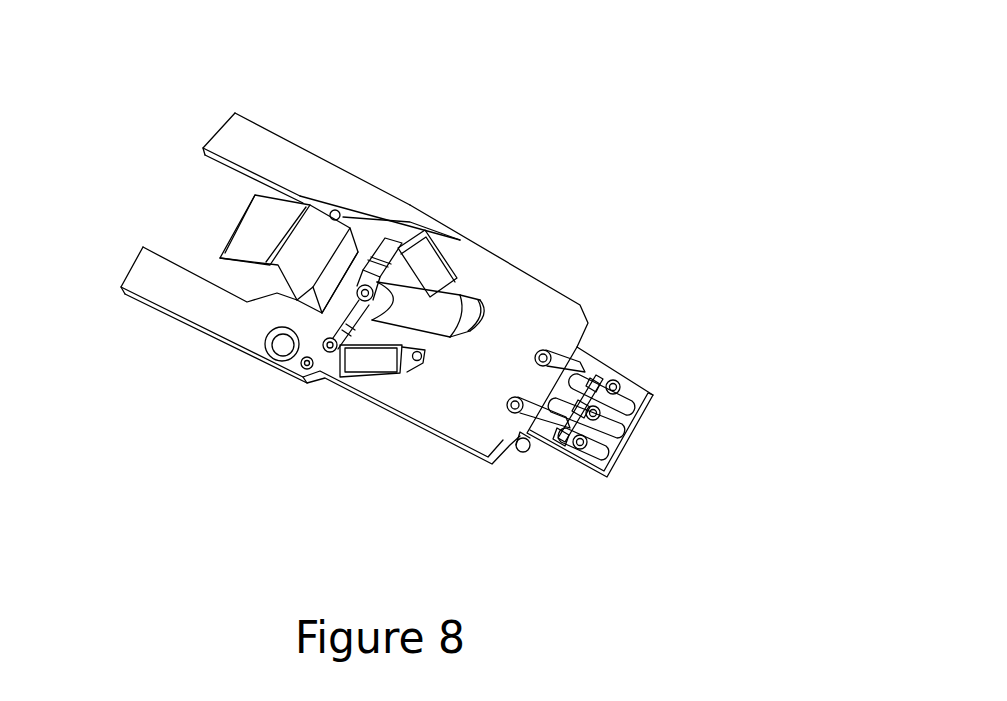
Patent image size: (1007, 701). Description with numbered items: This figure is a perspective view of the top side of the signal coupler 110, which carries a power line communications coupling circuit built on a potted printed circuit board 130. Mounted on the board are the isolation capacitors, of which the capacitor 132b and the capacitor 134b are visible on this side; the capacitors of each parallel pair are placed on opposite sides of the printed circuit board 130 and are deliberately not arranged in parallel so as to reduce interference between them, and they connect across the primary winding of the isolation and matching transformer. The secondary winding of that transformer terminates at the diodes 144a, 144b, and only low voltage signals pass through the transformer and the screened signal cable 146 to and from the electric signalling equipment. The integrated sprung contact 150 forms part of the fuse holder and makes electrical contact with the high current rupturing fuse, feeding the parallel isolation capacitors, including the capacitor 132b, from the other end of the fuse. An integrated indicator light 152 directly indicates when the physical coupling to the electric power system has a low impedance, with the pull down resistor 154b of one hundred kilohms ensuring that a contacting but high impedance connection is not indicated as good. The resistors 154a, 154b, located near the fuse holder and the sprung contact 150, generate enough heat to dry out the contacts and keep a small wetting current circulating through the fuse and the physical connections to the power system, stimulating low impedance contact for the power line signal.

The signal coupler 110 is at (218, 342).
The printed circuit board 130 is at (235, 137).
The isolation capacitor 132b is at (365, 363).
The isolation capacitor 134b is at (425, 255).
The diode 144a is at (522, 435).
The diode 144b is at (563, 428).
The screened signal cable 146 is at (603, 457).
The sprung contact 150 is at (243, 225).
The indicator light 152 is at (435, 307).
The resistor 154a is at (324, 351).
The pull down resistor 154b is at (380, 262).